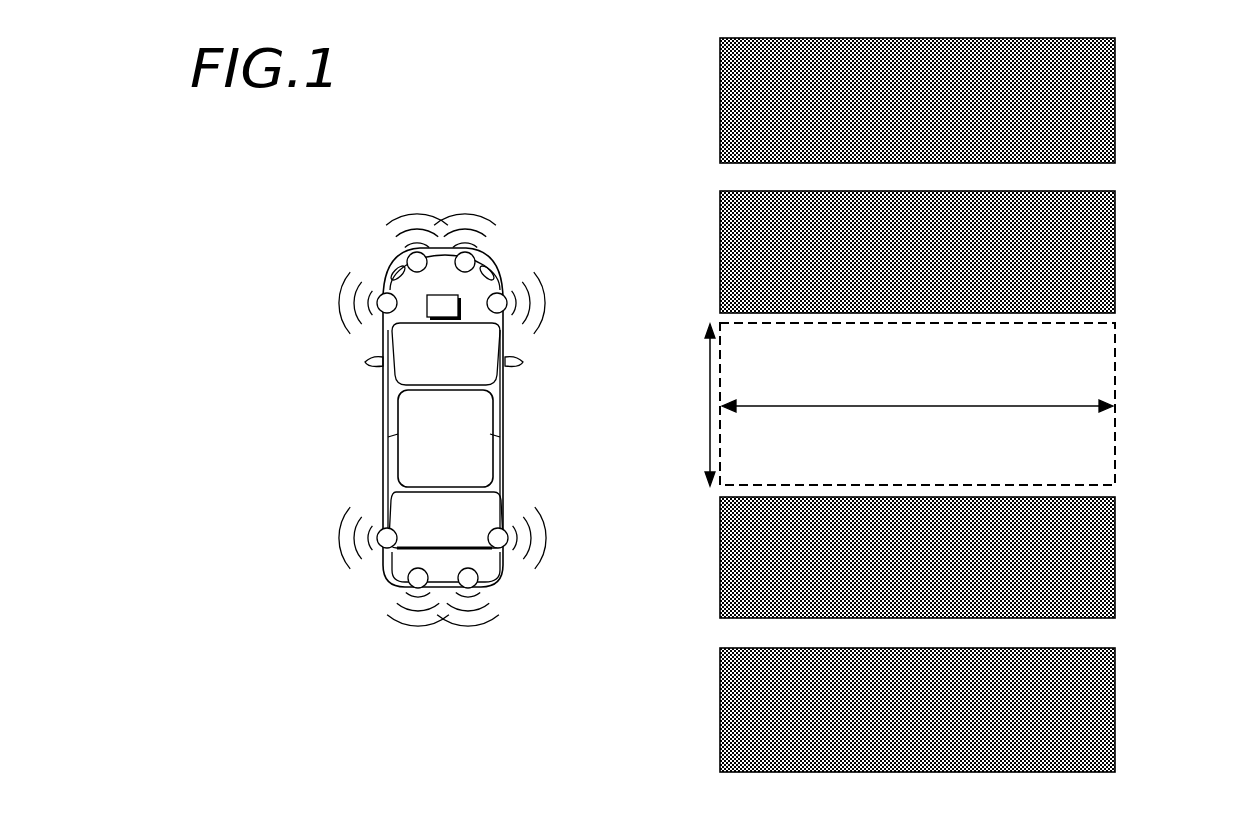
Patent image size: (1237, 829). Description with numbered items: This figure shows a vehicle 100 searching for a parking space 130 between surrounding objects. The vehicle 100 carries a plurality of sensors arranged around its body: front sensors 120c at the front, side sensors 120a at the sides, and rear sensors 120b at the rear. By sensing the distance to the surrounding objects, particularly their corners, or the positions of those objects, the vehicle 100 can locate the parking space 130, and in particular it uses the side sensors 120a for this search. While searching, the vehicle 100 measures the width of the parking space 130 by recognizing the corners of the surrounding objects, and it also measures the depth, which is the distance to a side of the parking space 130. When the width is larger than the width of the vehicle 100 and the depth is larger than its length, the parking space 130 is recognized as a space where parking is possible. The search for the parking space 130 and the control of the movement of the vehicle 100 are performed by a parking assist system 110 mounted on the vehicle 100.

The vehicle 100 is at (420, 428).
The parking assist system 110 is at (427, 305).
The side sensors 120a is at (502, 292).
The rear sensors 120b is at (478, 585).
The front sensors 120c is at (474, 257).
The parking space 130 is at (1115, 372).